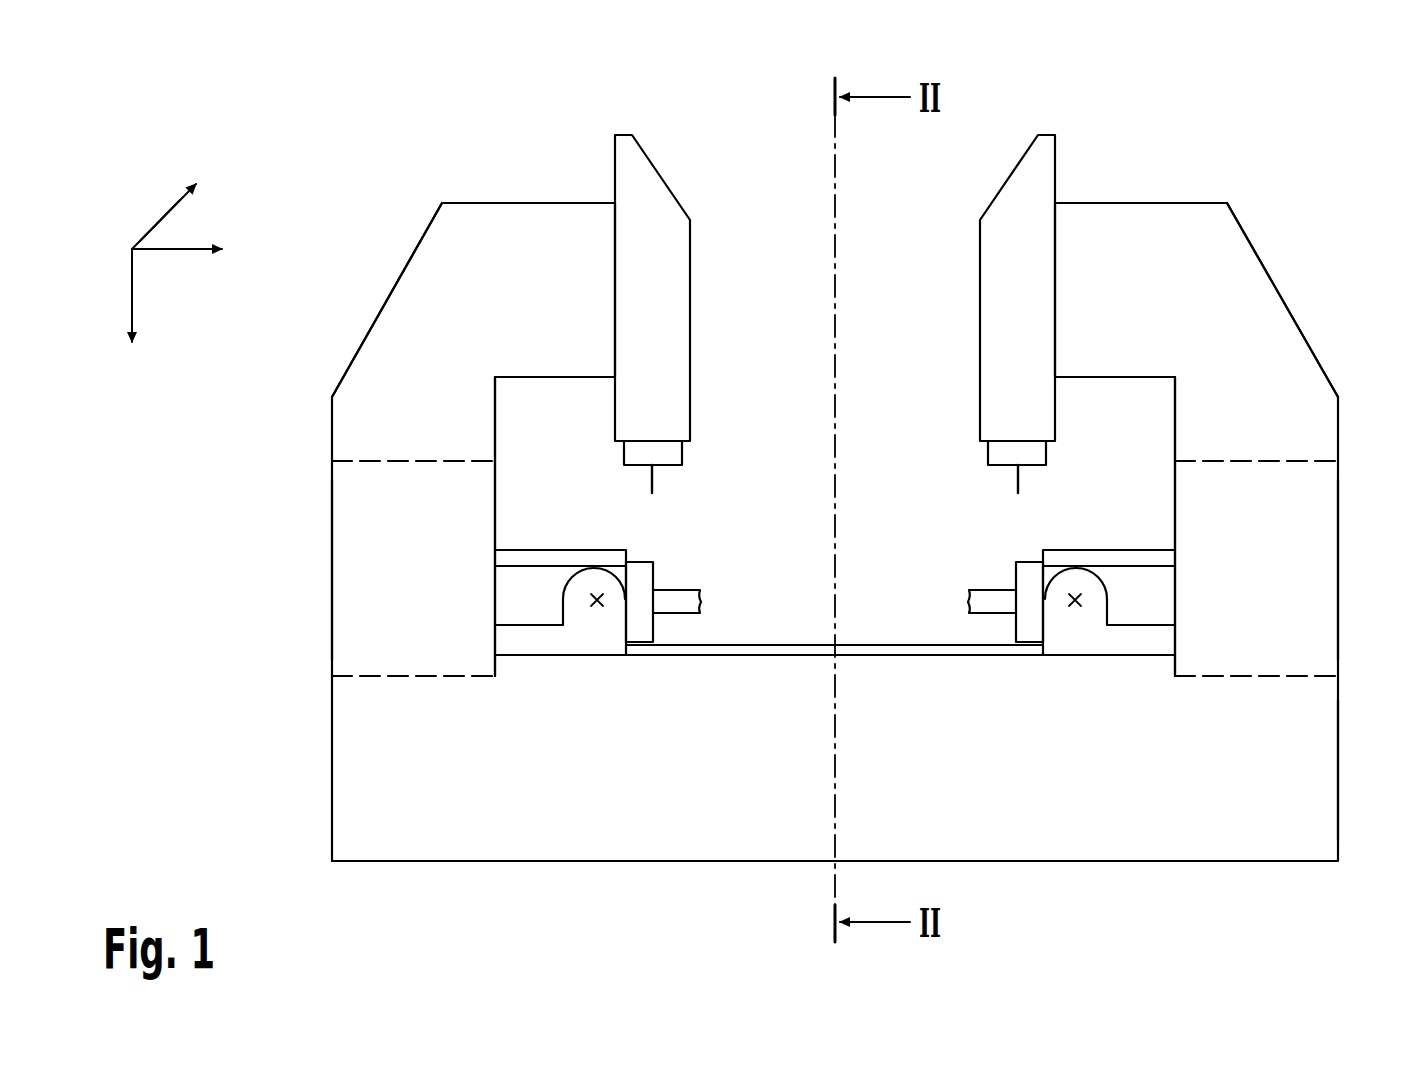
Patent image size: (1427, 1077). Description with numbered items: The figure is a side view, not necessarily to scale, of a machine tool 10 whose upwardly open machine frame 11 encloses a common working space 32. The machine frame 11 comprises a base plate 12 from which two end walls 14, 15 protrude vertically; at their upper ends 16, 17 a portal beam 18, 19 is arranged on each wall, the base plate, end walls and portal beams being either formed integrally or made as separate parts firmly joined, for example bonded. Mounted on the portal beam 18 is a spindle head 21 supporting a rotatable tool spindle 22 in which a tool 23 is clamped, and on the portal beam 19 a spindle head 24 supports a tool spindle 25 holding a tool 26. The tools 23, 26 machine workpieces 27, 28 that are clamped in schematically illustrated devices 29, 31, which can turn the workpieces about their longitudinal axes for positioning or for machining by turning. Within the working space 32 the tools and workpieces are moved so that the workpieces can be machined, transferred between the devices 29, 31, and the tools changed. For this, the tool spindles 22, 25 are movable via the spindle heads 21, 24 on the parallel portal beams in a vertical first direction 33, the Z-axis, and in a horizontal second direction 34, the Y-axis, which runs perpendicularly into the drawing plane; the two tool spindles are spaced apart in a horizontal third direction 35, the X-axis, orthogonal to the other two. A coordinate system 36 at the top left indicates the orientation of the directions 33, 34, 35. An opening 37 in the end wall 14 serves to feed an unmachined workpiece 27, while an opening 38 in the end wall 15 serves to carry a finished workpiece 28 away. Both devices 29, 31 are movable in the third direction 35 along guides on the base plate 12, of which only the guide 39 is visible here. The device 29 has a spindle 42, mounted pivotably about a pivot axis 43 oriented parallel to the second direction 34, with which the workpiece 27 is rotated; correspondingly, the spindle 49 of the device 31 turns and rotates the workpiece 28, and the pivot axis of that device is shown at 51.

The machine tool 10 is at (1316, 178).
The machine frame 11 is at (1316, 767).
The base plate 12 is at (386, 843).
The end wall 14 is at (401, 437).
The end wall 15 is at (1239, 437).
The upper end 16 is at (410, 313).
The upper end 17 is at (1260, 313).
The portal beam 18 is at (534, 295).
The portal beam 19 is at (1109, 295).
The spindle head 21 is at (665, 278).
The tool spindle 22 is at (665, 455).
The tool 23 is at (655, 480).
The spindle head 24 is at (1005, 278).
The tool spindle 25 is at (1005, 455).
The tool 26 is at (1015, 480).
The workpiece 27 is at (690, 605).
The workpiece 28 is at (980, 605).
The device 29 is at (568, 528).
The device 31 is at (1104, 528).
The working space 32 is at (863, 412).
The first direction 33 is at (132, 287).
The second direction 34 is at (160, 217).
The third direction 35 is at (192, 252).
The coordinate system 36 is at (157, 158).
The opening 37 is at (358, 552).
The opening 38 is at (1314, 552).
The guide 39 is at (877, 650).
The spindle 42 is at (643, 630).
The pivot axis 43 is at (592, 607).
The spindle 49 is at (1028, 630).
The pivot axis 51 is at (1078, 607).